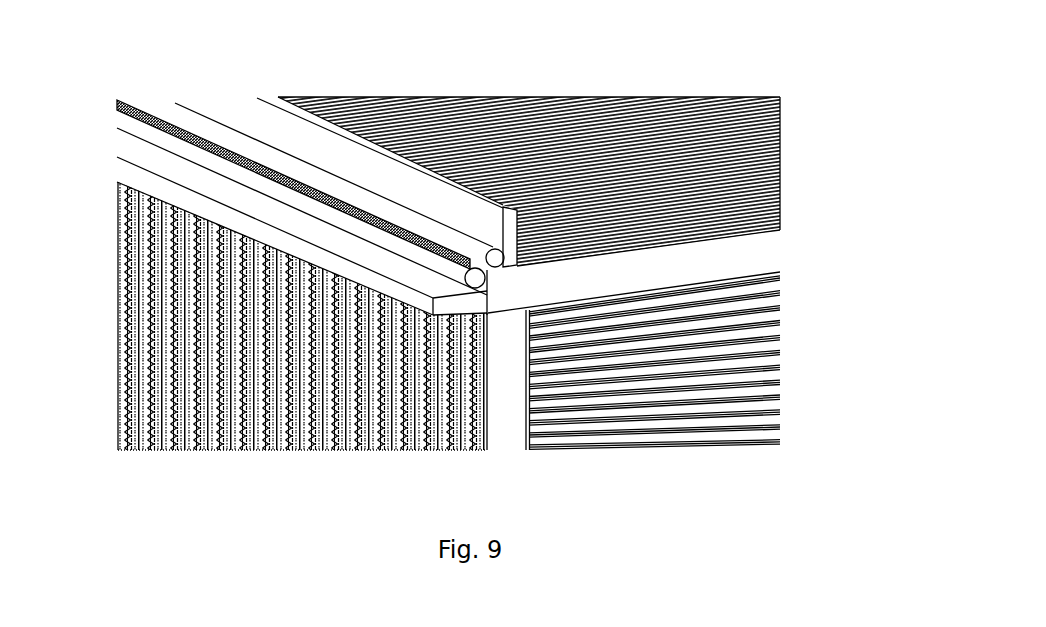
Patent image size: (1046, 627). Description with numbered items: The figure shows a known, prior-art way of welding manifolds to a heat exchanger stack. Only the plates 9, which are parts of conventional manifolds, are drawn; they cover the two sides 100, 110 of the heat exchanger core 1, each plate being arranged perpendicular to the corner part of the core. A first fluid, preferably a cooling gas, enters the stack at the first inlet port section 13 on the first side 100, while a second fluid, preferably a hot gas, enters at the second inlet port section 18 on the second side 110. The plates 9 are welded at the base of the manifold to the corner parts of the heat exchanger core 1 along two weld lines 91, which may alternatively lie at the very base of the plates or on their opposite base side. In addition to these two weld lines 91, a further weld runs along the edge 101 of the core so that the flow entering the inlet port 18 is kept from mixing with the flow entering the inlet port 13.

The heat exchanger core 1 is at (677, 470).
The plates 9 is at (324, 150).
The first inlet port section 13 is at (469, 130).
The second inlet port section 18 is at (166, 299).
The weld lines 91 is at (172, 117).
The first side 100 is at (574, 95).
The edge 101 is at (497, 282).
The second side 110 is at (266, 448).